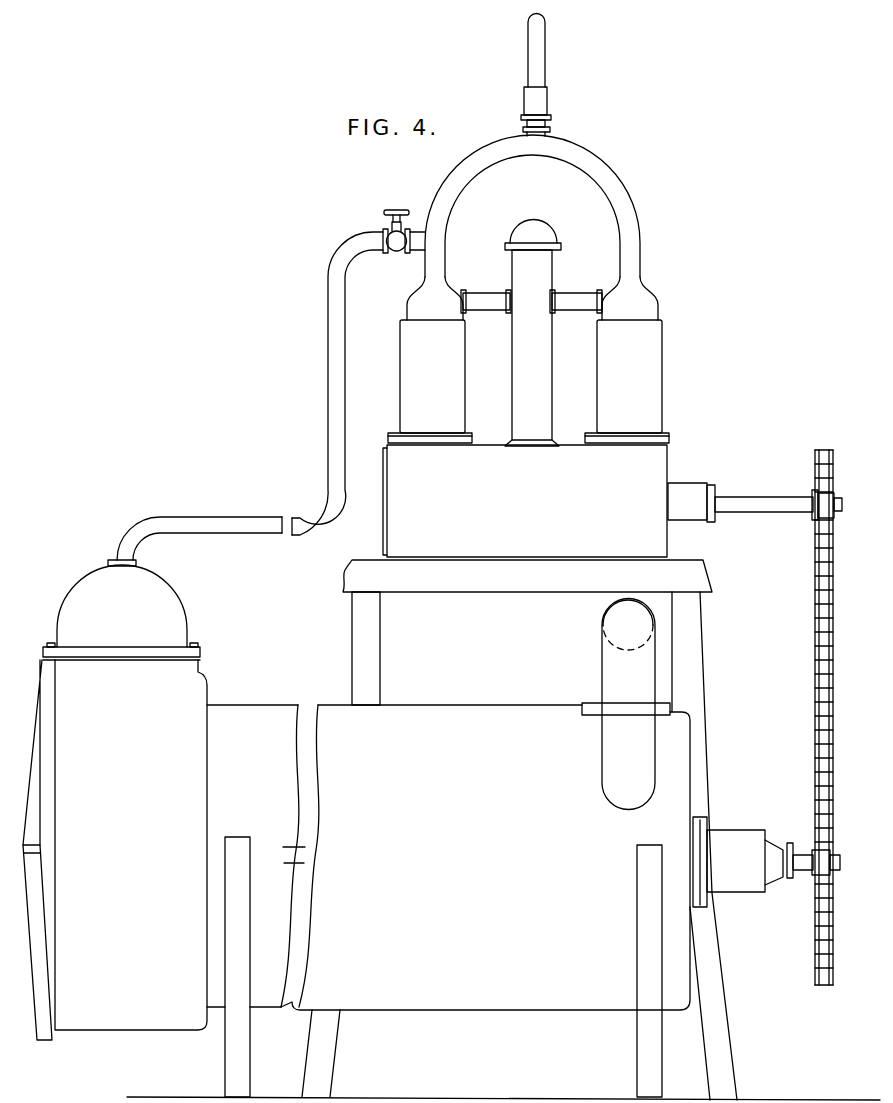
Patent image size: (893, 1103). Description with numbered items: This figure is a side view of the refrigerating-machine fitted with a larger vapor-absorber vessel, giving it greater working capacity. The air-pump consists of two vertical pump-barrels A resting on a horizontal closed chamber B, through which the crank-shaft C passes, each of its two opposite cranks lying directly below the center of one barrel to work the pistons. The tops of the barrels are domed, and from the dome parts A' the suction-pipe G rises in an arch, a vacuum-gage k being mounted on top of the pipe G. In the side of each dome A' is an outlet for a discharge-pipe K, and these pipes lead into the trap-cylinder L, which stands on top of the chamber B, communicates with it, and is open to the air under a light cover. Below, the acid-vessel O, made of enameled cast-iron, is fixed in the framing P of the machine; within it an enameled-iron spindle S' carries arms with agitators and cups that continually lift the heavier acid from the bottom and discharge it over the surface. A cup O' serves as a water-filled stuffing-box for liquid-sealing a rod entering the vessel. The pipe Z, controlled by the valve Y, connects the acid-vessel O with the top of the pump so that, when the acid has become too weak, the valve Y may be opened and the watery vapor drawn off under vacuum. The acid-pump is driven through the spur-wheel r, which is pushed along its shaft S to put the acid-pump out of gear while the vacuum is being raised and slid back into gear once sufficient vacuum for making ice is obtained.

The vacuum-gage k is at (543, 75).
The suction-pipe G is at (532, 206).
The valve Y is at (382, 229).
The pipe Z is at (250, 396).
The dome part A' is at (532, 298).
The discharge-pipe K is at (531, 294).
The pump-barrels A is at (528, 381).
The trap-cylinder L is at (533, 333).
The horizontal closed chamber B is at (525, 501).
The crank-shaft C is at (755, 499).
The framing P is at (503, 830).
The acid-vessel O is at (448, 805).
The shaft S is at (294, 869).
The cup O' is at (115, 800).
The spindle S' is at (766, 866).
The spur-wheel r is at (813, 717).